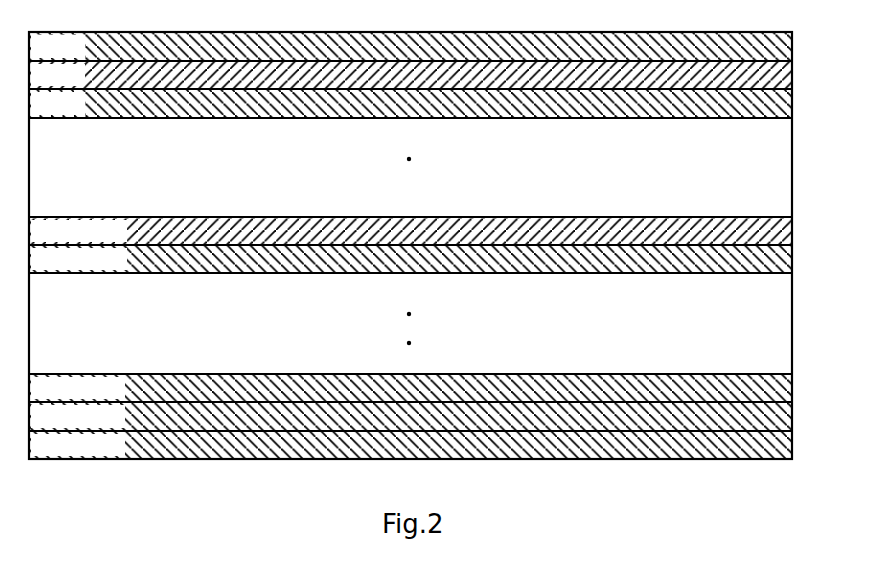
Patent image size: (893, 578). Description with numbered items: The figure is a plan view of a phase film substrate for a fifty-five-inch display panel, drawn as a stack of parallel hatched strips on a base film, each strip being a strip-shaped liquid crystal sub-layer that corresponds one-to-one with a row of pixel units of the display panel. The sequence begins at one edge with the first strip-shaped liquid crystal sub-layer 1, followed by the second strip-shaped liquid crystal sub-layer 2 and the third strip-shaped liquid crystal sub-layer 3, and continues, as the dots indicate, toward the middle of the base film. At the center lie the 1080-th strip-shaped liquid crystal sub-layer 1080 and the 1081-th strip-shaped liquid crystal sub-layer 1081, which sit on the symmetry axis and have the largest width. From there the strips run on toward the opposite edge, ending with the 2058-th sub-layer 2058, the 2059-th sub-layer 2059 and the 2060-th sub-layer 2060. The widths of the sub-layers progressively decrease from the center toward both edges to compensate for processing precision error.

The first strip-shaped liquid crystal sub-layer 1 is at (410, 46).
The second strip-shaped liquid crystal sub-layer 2 is at (410, 75).
The third strip-shaped liquid crystal sub-layer 3 is at (410, 103).
The 1080-th strip-shaped liquid crystal sub-layer 1080 is at (410, 231).
The 1081-th strip-shaped liquid crystal sub-layer 1081 is at (410, 259).
The 2058-th strip-shaped liquid crystal sub-layer 2058 is at (410, 388).
The 2059-th strip-shaped liquid crystal sub-layer 2059 is at (410, 416).
The 2060-th strip-shaped liquid crystal sub-layer 2060 is at (410, 445).